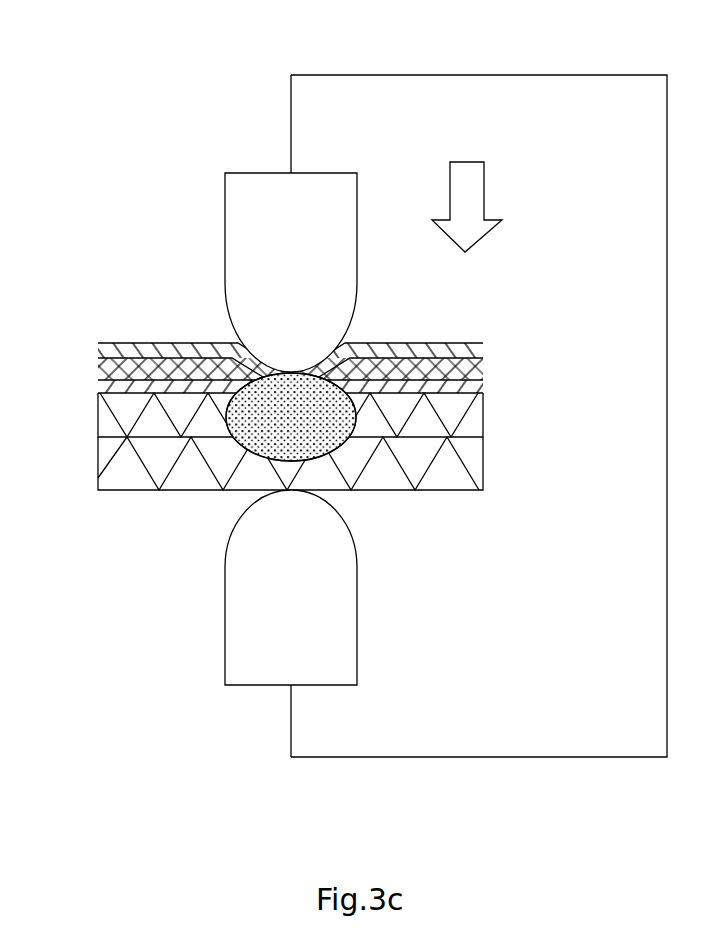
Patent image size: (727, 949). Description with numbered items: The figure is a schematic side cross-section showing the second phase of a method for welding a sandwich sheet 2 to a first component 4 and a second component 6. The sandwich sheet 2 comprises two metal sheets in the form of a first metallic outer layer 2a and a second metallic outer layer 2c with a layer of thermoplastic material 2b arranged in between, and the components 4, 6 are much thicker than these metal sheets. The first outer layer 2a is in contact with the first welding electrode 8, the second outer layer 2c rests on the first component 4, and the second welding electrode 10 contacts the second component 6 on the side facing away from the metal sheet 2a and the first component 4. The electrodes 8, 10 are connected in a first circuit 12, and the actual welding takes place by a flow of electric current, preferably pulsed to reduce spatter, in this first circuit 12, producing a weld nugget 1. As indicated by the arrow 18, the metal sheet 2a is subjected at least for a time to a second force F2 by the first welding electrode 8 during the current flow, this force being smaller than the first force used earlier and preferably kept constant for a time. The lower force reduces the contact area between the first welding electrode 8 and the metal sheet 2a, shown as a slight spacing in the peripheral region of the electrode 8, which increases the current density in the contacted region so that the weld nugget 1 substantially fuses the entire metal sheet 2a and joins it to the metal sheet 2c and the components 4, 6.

The weld nugget 1 is at (338, 448).
The sandwich sheet 2 is at (299, 346).
The first metallic outer layer 2a is at (122, 347).
The layer of thermoplastic material 2b is at (99, 367).
The second metallic outer layer 2c is at (98, 387).
The first component 4 is at (471, 413).
The second component 6 is at (470, 465).
The first welding electrode 8 is at (337, 257).
The second welding electrode 10 is at (340, 610).
The first circuit 12 is at (551, 75).
The arrow 18 is at (484, 172).